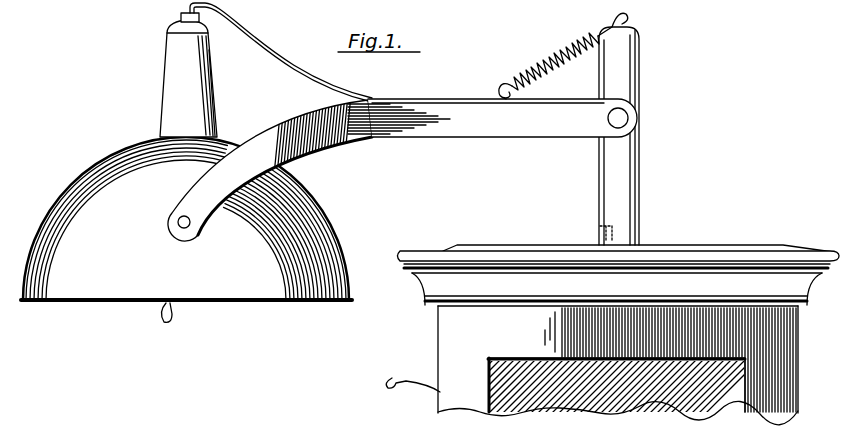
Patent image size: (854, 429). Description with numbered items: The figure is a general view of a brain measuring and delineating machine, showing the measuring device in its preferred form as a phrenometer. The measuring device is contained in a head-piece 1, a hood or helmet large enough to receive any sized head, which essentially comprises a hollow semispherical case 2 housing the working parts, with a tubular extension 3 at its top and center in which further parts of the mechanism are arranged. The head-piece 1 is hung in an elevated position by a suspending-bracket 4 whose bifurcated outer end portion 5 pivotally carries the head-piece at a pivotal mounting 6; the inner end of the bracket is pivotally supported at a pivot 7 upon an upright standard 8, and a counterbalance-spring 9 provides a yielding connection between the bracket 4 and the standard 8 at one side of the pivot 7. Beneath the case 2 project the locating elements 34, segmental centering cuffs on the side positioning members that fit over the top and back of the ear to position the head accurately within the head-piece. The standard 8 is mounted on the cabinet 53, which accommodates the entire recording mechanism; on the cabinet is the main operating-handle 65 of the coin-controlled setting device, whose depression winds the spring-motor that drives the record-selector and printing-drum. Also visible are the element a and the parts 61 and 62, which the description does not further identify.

The head-piece 1 is at (106, 166).
The semispherical case 2 is at (300, 303).
The tubular extension 3 is at (211, 75).
The suspending-bracket 4 is at (503, 127).
The bifurcated outer end portion 5 is at (246, 173).
The pivotal mounting 6 is at (189, 227).
The pivotal support 7 is at (630, 120).
The upright standard 8 is at (632, 172).
The counterbalance-spring 9 is at (539, 52).
The conducting tube a is at (302, 78).
The locating elements 34 is at (172, 318).
The cabinet 53 is at (670, 360).
The cabinet part 61 is at (656, 424).
The panel 62 is at (585, 425).
The main operating-handle 65 is at (402, 372).